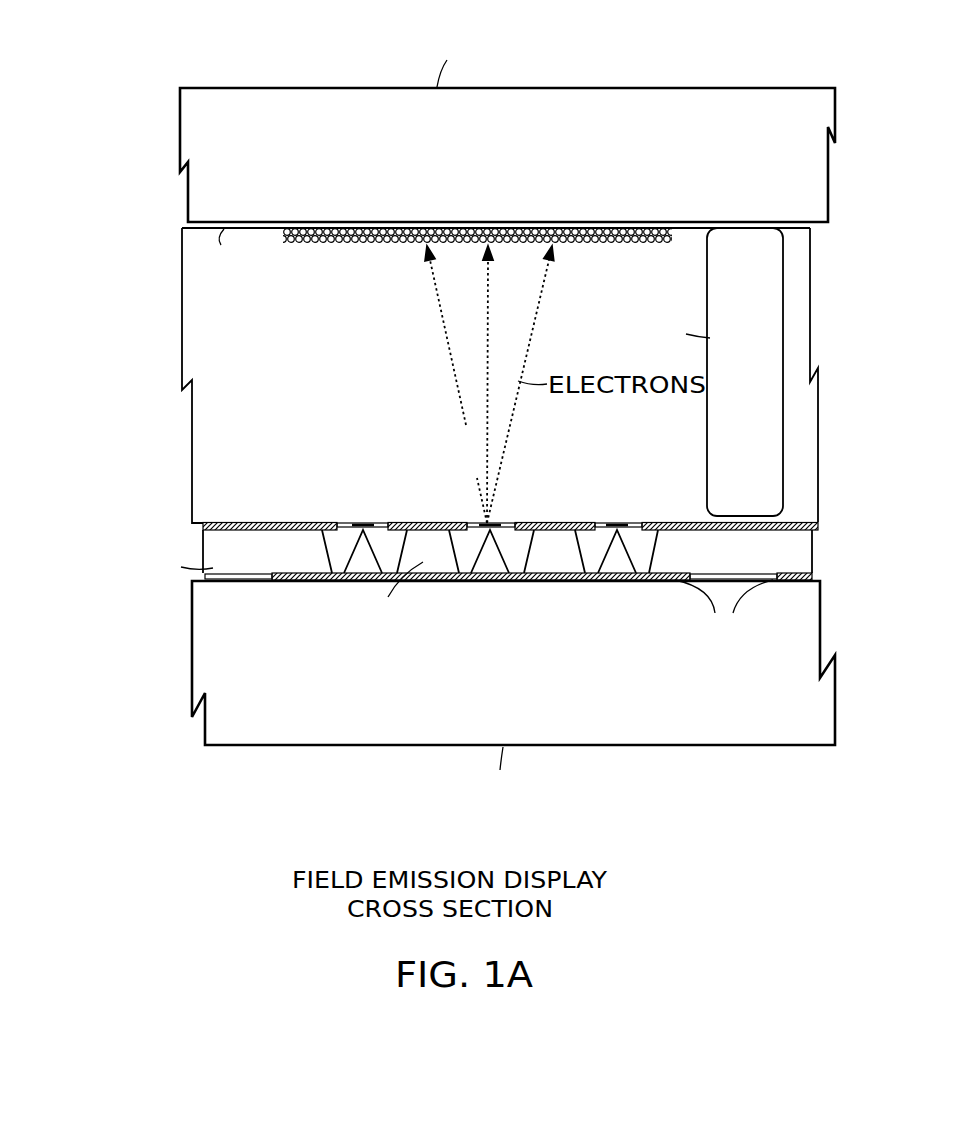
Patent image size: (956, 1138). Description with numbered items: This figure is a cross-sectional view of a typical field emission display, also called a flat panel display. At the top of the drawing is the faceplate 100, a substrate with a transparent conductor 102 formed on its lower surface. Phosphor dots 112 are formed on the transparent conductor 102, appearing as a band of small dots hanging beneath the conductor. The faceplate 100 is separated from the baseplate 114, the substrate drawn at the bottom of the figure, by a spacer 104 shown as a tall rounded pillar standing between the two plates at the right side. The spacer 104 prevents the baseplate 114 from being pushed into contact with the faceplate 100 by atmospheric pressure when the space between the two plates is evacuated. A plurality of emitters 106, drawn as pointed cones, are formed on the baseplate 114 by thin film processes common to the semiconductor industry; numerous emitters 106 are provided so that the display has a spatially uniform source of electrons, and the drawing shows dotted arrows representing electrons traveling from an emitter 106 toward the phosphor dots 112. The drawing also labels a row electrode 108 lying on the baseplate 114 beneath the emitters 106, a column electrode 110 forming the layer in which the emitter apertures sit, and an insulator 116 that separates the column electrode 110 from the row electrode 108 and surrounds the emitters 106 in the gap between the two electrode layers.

The faceplate 100 is at (658, 89).
The transparent conductor 102 is at (200, 230).
The spacer 104 is at (778, 306).
The emitters 106 is at (617, 522).
The row electrodes 108 is at (793, 574).
The column electrode 110 is at (400, 522).
The phosphor dots 112 is at (393, 258).
The baseplate 114 is at (217, 748).
The insulator 116 is at (203, 538).